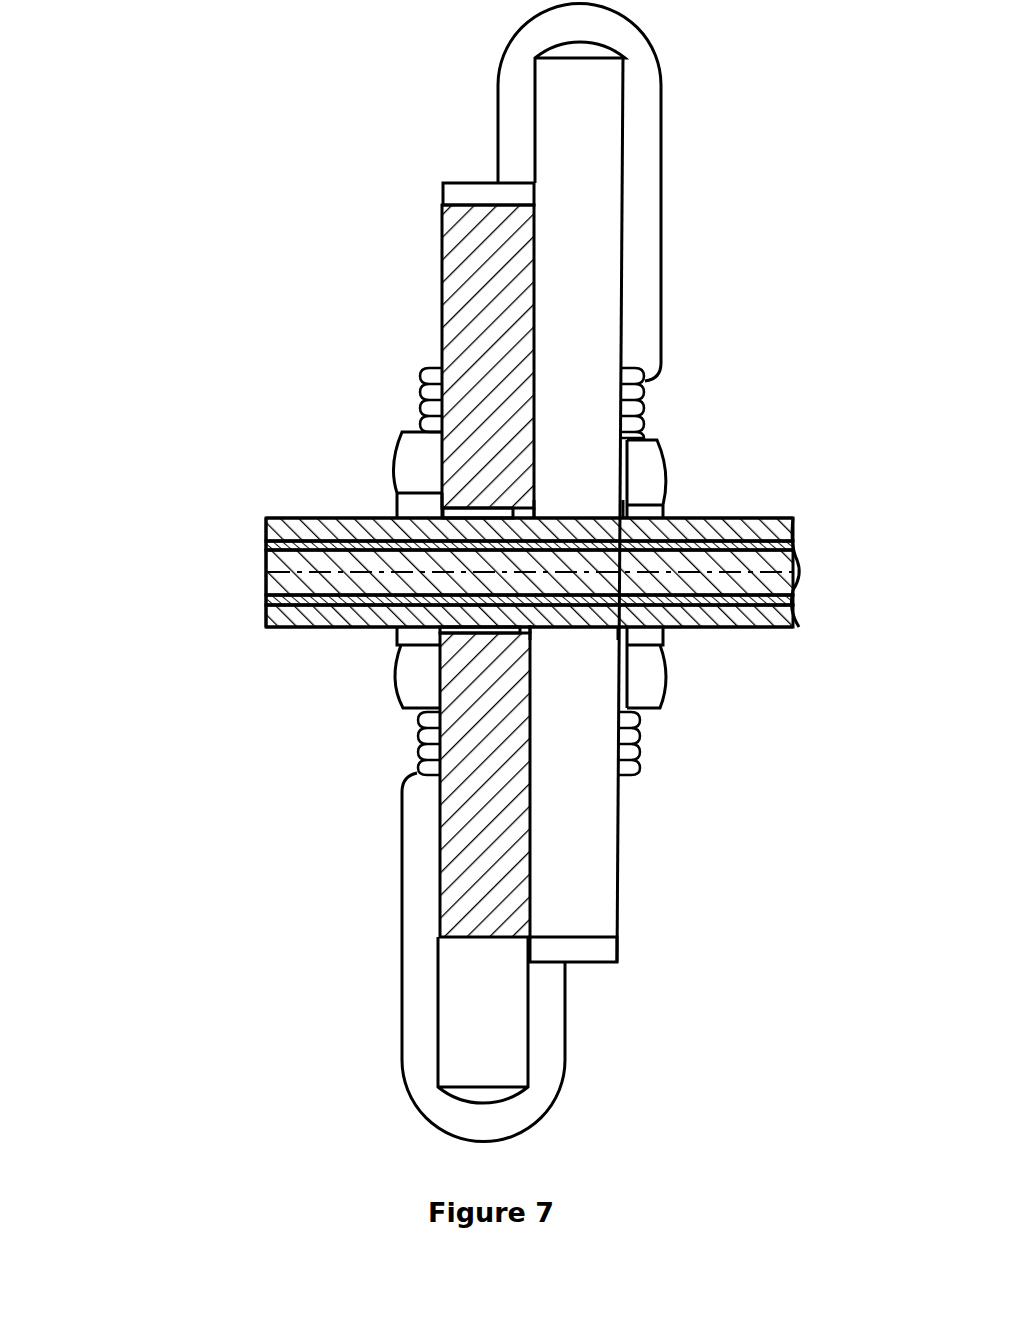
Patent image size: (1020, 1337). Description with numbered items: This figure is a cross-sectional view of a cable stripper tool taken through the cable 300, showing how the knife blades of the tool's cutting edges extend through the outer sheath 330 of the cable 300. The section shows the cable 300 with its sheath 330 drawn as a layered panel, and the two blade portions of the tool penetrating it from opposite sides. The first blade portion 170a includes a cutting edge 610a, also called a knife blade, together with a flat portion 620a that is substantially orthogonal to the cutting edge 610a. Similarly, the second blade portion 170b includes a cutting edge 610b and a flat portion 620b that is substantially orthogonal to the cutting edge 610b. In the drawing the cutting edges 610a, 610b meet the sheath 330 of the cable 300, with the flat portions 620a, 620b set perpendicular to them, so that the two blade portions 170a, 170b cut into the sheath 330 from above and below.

The cable 300 is at (213, 529).
The sheath 330 is at (798, 607).
The first blade portion 170a is at (470, 852).
The second blade portion 170b is at (485, 475).
The flat portion 620a is at (512, 629).
The flat portion 620b is at (457, 500).
The cutting edge 610a is at (524, 624).
The cutting edge 610b is at (534, 509).